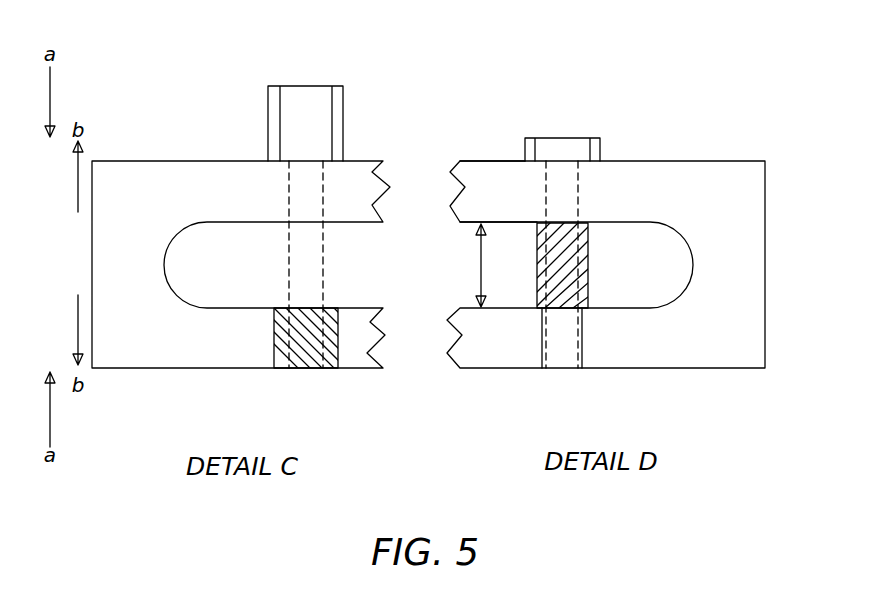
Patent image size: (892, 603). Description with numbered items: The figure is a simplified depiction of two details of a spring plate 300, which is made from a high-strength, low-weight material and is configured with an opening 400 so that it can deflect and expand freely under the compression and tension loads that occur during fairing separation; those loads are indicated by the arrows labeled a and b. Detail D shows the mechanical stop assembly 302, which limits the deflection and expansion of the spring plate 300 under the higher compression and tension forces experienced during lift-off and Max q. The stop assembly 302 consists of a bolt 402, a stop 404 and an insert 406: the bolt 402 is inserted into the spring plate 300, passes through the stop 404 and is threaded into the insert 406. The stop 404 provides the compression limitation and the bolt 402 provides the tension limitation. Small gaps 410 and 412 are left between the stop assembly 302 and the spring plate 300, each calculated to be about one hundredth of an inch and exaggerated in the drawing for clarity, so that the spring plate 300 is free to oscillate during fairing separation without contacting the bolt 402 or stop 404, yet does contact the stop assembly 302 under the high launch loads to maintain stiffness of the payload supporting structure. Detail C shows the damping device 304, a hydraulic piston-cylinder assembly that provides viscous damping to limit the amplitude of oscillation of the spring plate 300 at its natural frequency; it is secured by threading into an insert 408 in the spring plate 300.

The spring plate 300 is at (92, 254).
The damping device 304 is at (270, 85).
The insert 408 is at (273, 350).
The bolt 402 is at (568, 138).
The mechanical stop assembly 302 is at (604, 111).
The gap 412 is at (510, 160).
The gap 410 is at (518, 228).
The opening 400 is at (479, 253).
The stop 404 is at (588, 262).
The insert 406 is at (583, 352).